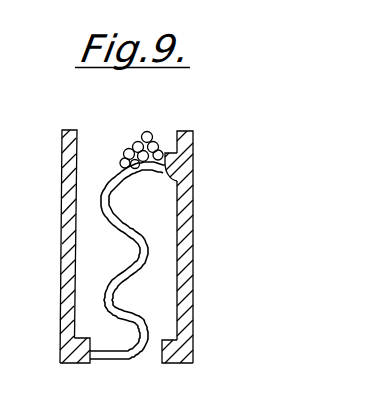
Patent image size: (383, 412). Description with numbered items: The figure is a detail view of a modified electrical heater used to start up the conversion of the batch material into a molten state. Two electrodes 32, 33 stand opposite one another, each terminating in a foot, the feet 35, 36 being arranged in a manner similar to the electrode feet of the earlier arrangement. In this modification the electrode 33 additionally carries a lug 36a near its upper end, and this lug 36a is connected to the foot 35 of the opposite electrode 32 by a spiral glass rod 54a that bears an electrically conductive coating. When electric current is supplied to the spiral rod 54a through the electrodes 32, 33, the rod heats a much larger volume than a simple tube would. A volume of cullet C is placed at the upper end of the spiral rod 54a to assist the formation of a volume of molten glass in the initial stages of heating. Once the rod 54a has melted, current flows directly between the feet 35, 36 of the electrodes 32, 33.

The electrode 32 is at (66, 155).
The electrode 33 is at (193, 145).
The foot 35 is at (74, 360).
The foot 36 is at (168, 362).
The lug 36a is at (190, 181).
The spiral glass rod 54a is at (119, 358).
The cullet C is at (139, 141).